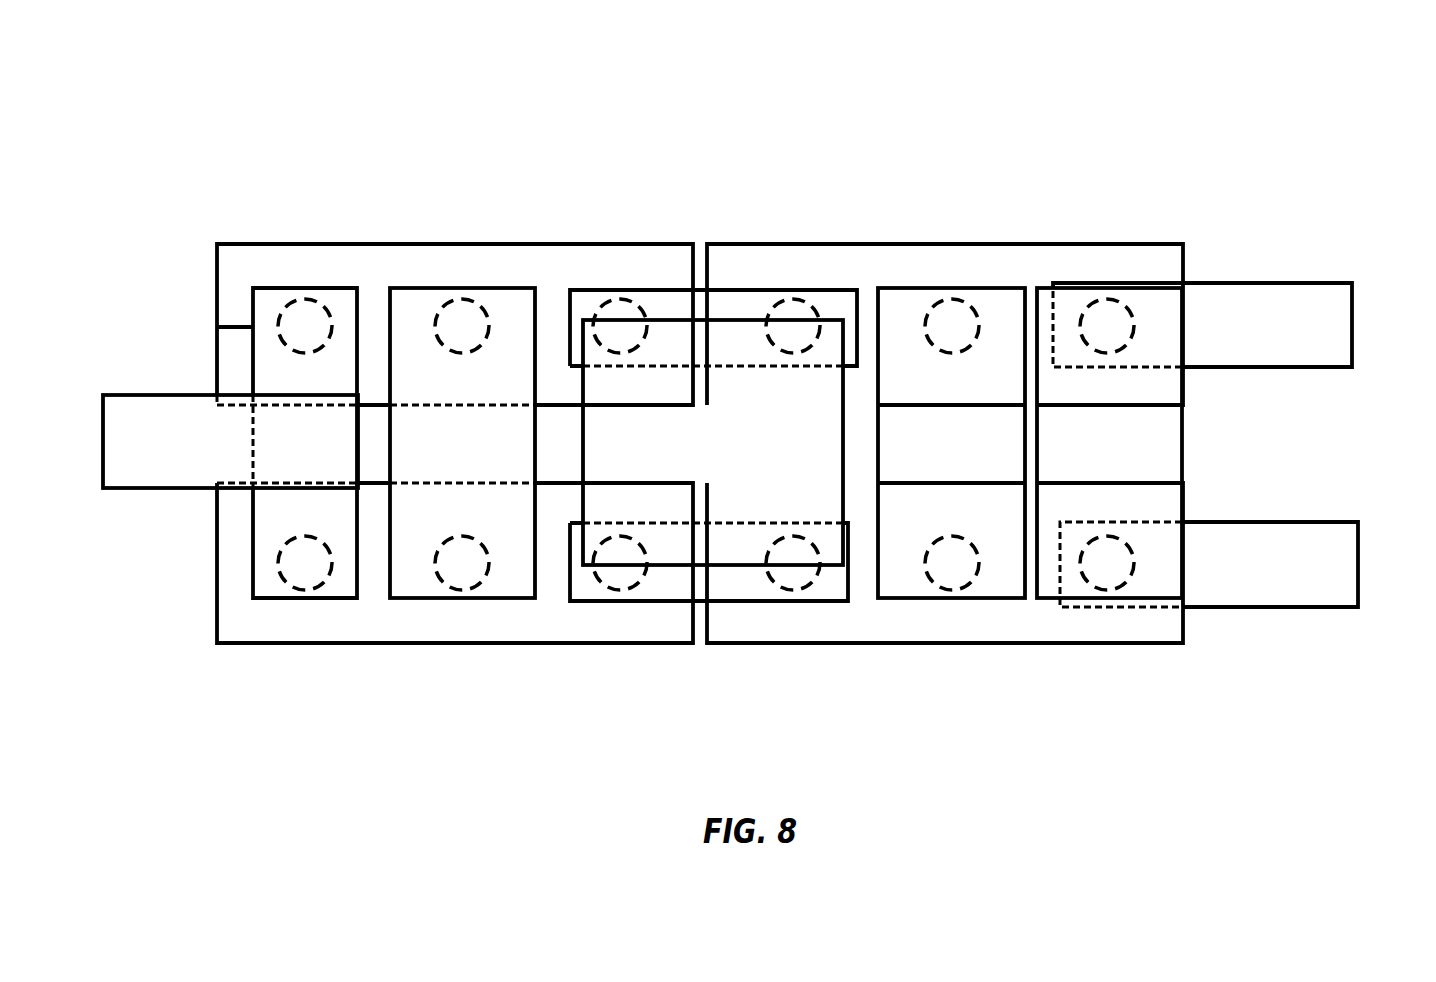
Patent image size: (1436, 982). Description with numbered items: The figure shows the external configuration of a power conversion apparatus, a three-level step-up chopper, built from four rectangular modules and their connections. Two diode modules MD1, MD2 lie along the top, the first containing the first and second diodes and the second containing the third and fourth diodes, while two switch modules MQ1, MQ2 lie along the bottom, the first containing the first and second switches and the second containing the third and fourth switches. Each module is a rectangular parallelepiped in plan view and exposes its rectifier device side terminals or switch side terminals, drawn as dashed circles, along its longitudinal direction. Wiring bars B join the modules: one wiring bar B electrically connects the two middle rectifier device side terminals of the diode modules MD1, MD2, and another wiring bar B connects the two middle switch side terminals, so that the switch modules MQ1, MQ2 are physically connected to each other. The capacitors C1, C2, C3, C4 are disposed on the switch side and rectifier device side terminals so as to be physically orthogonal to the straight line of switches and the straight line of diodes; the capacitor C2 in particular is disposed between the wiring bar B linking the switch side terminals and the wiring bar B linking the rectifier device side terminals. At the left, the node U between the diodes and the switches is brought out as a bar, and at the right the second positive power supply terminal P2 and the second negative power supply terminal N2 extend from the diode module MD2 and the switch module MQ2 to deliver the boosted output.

The diode module MD1 is at (217, 259).
The switch module MQ1 is at (217, 578).
The diode module MD2 is at (1183, 257).
The switch module MQ2 is at (1185, 643).
The node U is at (212, 441).
The second positive power supply terminal P2 is at (1243, 325).
The second negative power supply terminal N2 is at (1247, 566).
The wiring bar B is at (217, 327).
The capacitor C1 is at (413, 287).
The capacitor C2 is at (720, 318).
The capacitor C3 is at (907, 288).
The capacitor C4 is at (1055, 287).